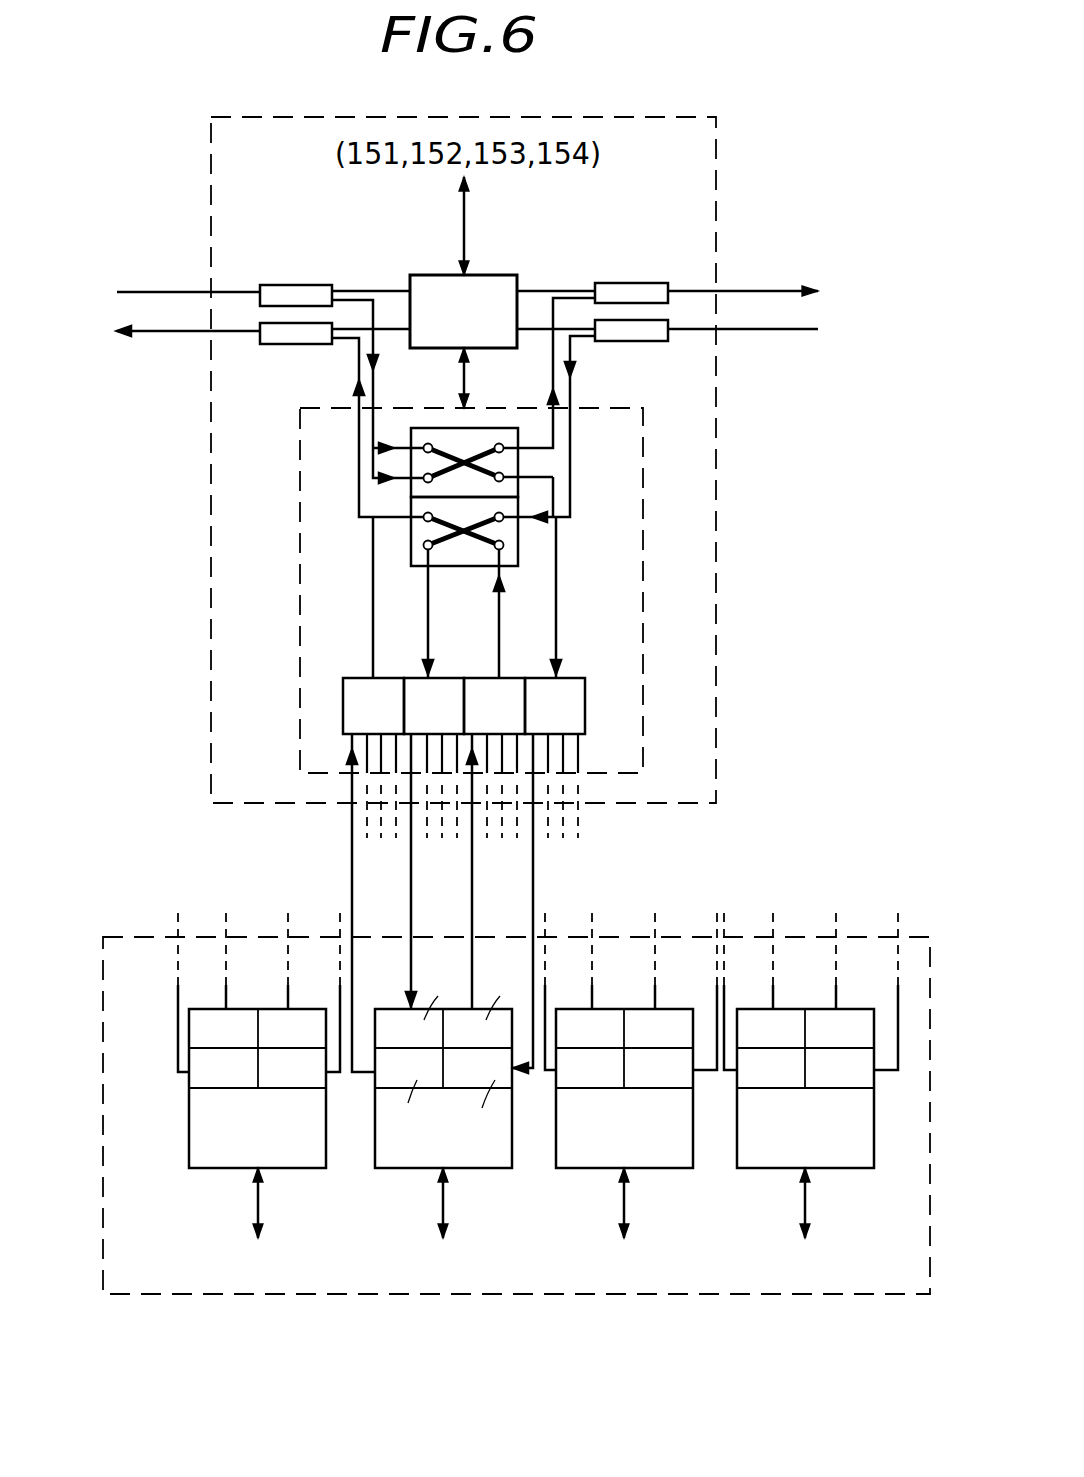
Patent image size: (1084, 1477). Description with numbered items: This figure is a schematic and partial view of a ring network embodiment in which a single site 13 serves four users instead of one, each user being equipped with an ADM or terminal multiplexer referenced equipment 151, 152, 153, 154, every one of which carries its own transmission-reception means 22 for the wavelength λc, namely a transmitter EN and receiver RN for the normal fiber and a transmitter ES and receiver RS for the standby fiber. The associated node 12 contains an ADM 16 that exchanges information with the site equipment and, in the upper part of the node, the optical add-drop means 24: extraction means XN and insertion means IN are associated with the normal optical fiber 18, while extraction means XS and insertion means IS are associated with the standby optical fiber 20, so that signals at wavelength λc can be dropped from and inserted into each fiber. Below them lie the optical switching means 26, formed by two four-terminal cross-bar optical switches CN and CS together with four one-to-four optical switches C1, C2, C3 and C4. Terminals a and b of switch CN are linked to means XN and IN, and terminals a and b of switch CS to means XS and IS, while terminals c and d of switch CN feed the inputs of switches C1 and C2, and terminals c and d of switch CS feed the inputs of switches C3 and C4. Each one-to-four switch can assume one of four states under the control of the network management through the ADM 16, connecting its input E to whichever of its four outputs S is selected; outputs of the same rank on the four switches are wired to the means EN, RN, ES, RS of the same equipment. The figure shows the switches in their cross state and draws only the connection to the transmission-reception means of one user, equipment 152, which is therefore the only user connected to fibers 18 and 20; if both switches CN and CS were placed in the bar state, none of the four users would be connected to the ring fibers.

The node 12 is at (651, 117).
The site 13 is at (505, 1283).
The ADM 16 is at (493, 282).
The normal optical fiber 18 is at (770, 331).
The standby optical fiber 20 is at (770, 290).
The transmission-reception means 22 is at (168, 1012).
The optical add-drop means 24 is at (338, 270).
The optical switching means 26 is at (640, 567).
The equipment 151 is at (275, 1162).
The equipment 152 is at (460, 1160).
The equipment 153 is at (636, 1160).
The equipment 154 is at (818, 1160).
The extraction means for the standby fiber XS is at (283, 292).
The insertion means for the normal fiber IN is at (297, 343).
The insertion means for the standby fiber IS is at (632, 288).
The extraction means for the normal fiber XN is at (637, 342).
The optical switch CS is at (424, 436).
The optical switch CN is at (420, 540).
The input E is at (432, 668).
The outputs S is at (347, 736).
The optical switch C1 is at (453, 688).
The optical switch C2 is at (507, 688).
The optical switch C3 is at (578, 688).
The optical switch C4 is at (380, 688).